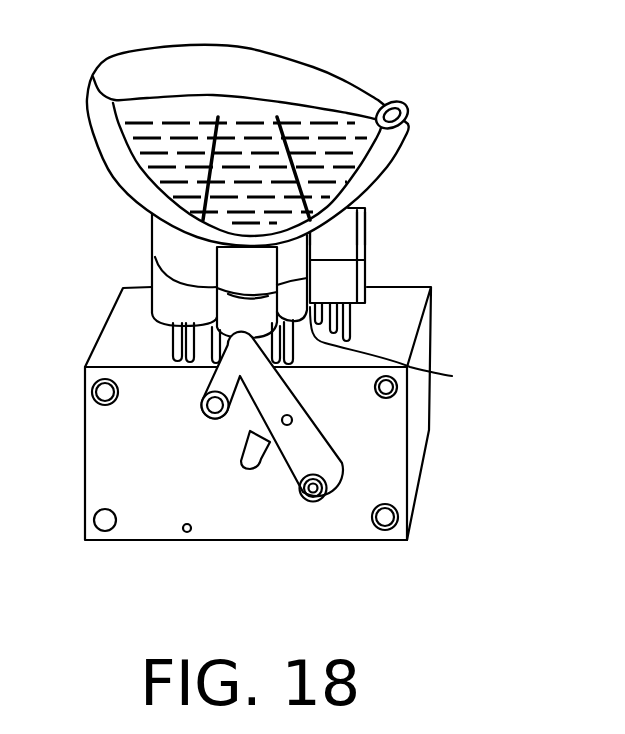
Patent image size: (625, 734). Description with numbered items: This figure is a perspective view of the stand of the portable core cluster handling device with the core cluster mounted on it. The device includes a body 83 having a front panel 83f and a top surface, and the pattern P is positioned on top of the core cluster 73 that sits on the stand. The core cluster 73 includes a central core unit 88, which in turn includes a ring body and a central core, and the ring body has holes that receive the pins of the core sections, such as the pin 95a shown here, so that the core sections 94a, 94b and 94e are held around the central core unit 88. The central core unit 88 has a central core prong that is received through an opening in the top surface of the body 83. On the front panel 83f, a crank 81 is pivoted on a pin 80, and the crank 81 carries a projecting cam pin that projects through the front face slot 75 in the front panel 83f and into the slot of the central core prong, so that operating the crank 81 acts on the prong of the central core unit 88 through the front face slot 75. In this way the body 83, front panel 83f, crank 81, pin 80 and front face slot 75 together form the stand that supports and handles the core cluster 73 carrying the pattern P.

The pattern P is at (270, 77).
The core cluster 73 is at (423, 252).
The front face slot 75 is at (243, 461).
The pin 80 is at (313, 491).
The crank 81 is at (303, 453).
The body 83 is at (476, 418).
The front panel 83f is at (177, 466).
The central core unit 88 is at (170, 298).
The core section 94a is at (365, 213).
The core section 94b is at (170, 237).
The core section 94e is at (343, 247).
The pin 95a is at (405, 351).